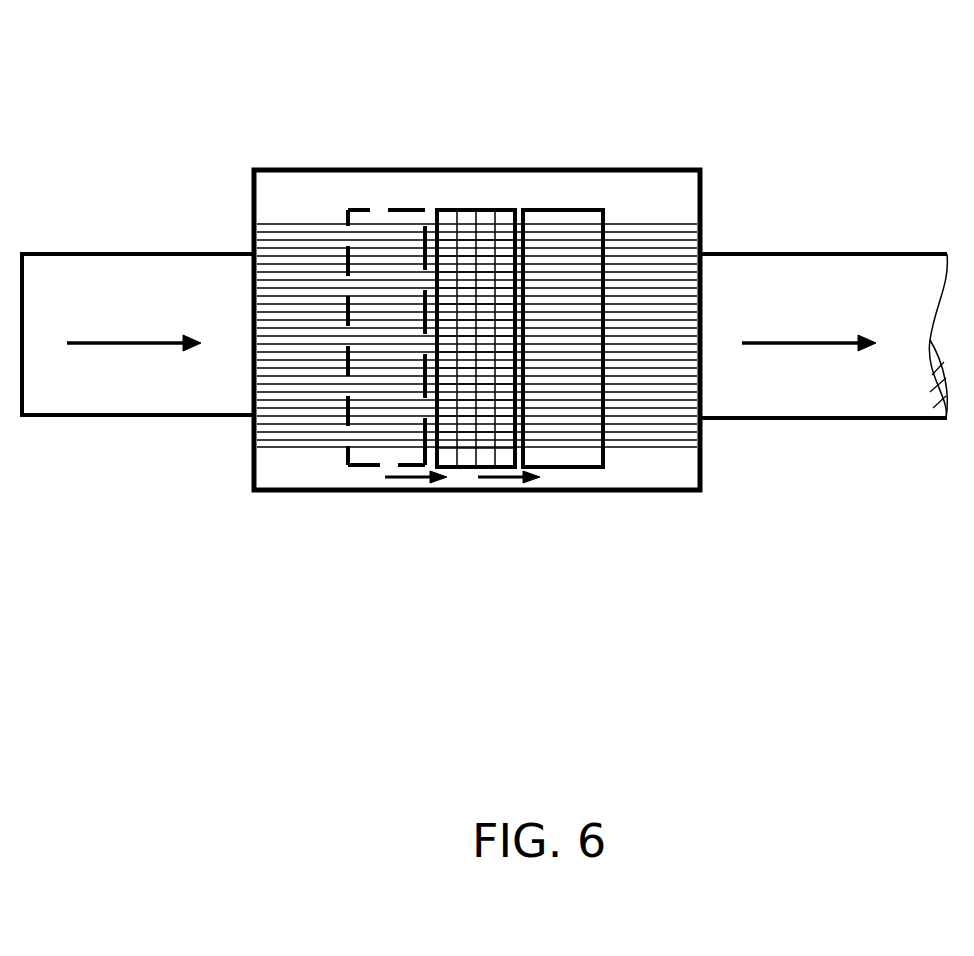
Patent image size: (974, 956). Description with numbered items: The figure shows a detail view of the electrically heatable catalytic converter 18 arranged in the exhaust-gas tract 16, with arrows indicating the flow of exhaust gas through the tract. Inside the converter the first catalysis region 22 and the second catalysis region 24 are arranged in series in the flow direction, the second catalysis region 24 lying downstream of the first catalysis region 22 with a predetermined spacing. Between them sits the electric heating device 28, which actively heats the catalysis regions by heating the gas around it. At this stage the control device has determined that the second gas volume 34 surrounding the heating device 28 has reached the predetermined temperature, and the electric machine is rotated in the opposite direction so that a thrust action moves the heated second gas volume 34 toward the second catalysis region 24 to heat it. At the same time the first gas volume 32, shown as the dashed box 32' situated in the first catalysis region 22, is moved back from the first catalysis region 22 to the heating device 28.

The exhaust-gas tract 16 is at (149, 483).
The electrically heatable catalytic converter 18 is at (698, 120).
The first catalysis region 22 is at (305, 418).
The second catalysis region 24 is at (612, 428).
The electric heating device 28 is at (490, 230).
The first gas volume 32 is at (448, 266).
The first gas volume (dashed box) 32' is at (421, 267).
The second gas volume 34 is at (565, 210).